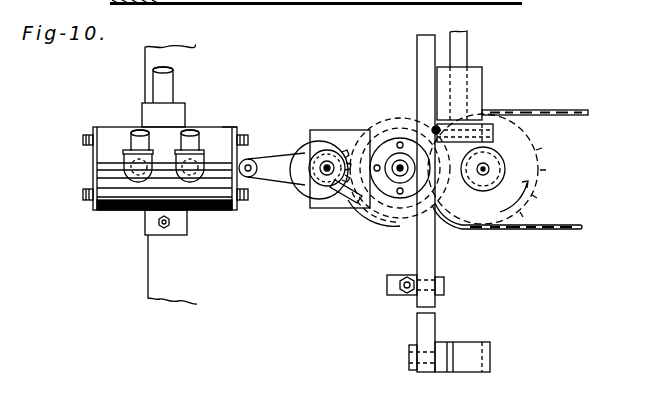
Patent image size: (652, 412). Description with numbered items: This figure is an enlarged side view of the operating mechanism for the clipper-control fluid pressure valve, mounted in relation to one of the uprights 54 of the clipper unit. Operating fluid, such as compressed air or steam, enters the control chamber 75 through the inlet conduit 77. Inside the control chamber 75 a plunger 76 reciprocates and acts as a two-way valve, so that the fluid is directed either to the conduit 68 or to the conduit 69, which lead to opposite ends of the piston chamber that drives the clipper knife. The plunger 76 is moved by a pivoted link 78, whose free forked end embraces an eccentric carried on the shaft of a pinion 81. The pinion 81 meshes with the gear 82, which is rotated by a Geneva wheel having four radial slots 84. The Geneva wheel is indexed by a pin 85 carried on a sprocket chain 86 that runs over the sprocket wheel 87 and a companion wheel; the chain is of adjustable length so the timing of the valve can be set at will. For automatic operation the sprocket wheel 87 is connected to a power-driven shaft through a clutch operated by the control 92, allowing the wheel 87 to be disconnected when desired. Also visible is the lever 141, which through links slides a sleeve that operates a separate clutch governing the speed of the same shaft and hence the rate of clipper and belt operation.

The uprights 54 is at (146, 258).
The fluid pressure conduit 68 is at (198, 148).
The fluid pressure conduit 69 is at (124, 148).
The control chamber 75 is at (224, 130).
The plunger 76 is at (250, 160).
The inlet conduit 77 is at (170, 86).
The pivoted link 78 is at (268, 177).
The pinion 81 is at (338, 200).
The gear 82 is at (360, 206).
The radial slots 84 is at (370, 132).
The pin 85 is at (438, 128).
The sprocket chain 86 is at (546, 108).
The sprocket wheel 87 is at (523, 162).
The control 92 is at (460, 56).
The lever 141 is at (428, 246).